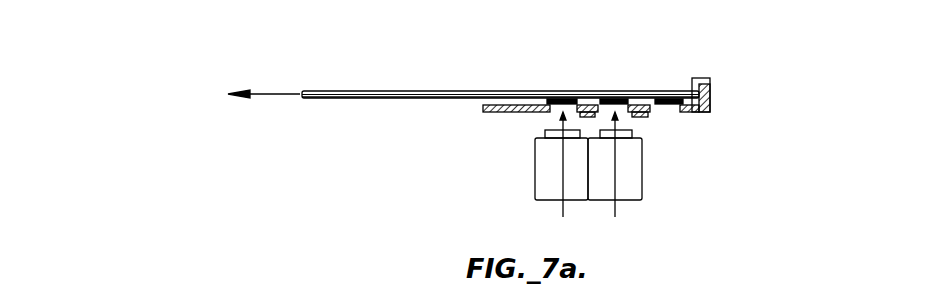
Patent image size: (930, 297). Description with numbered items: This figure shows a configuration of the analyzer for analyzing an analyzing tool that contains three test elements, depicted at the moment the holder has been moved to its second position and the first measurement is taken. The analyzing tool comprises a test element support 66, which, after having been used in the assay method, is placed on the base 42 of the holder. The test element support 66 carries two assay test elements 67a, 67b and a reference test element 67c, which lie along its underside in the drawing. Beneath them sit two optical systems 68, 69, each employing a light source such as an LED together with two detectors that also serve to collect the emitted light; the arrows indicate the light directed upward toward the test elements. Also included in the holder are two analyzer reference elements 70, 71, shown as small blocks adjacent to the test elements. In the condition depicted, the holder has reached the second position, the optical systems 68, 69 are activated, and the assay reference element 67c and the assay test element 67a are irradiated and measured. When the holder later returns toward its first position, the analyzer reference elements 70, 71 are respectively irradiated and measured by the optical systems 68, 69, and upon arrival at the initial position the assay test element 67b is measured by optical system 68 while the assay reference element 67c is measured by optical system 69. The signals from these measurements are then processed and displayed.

The test element support 66 is at (362, 99).
The base 42 is at (492, 113).
The assay test element 67a is at (560, 98).
The assay test element 67b is at (671, 98).
The reference test element 67c is at (617, 98).
The optical system 68 is at (632, 172).
The optical system 69 is at (543, 170).
The analyzer reference element 70 is at (648, 118).
The analyzer reference element 71 is at (592, 118).